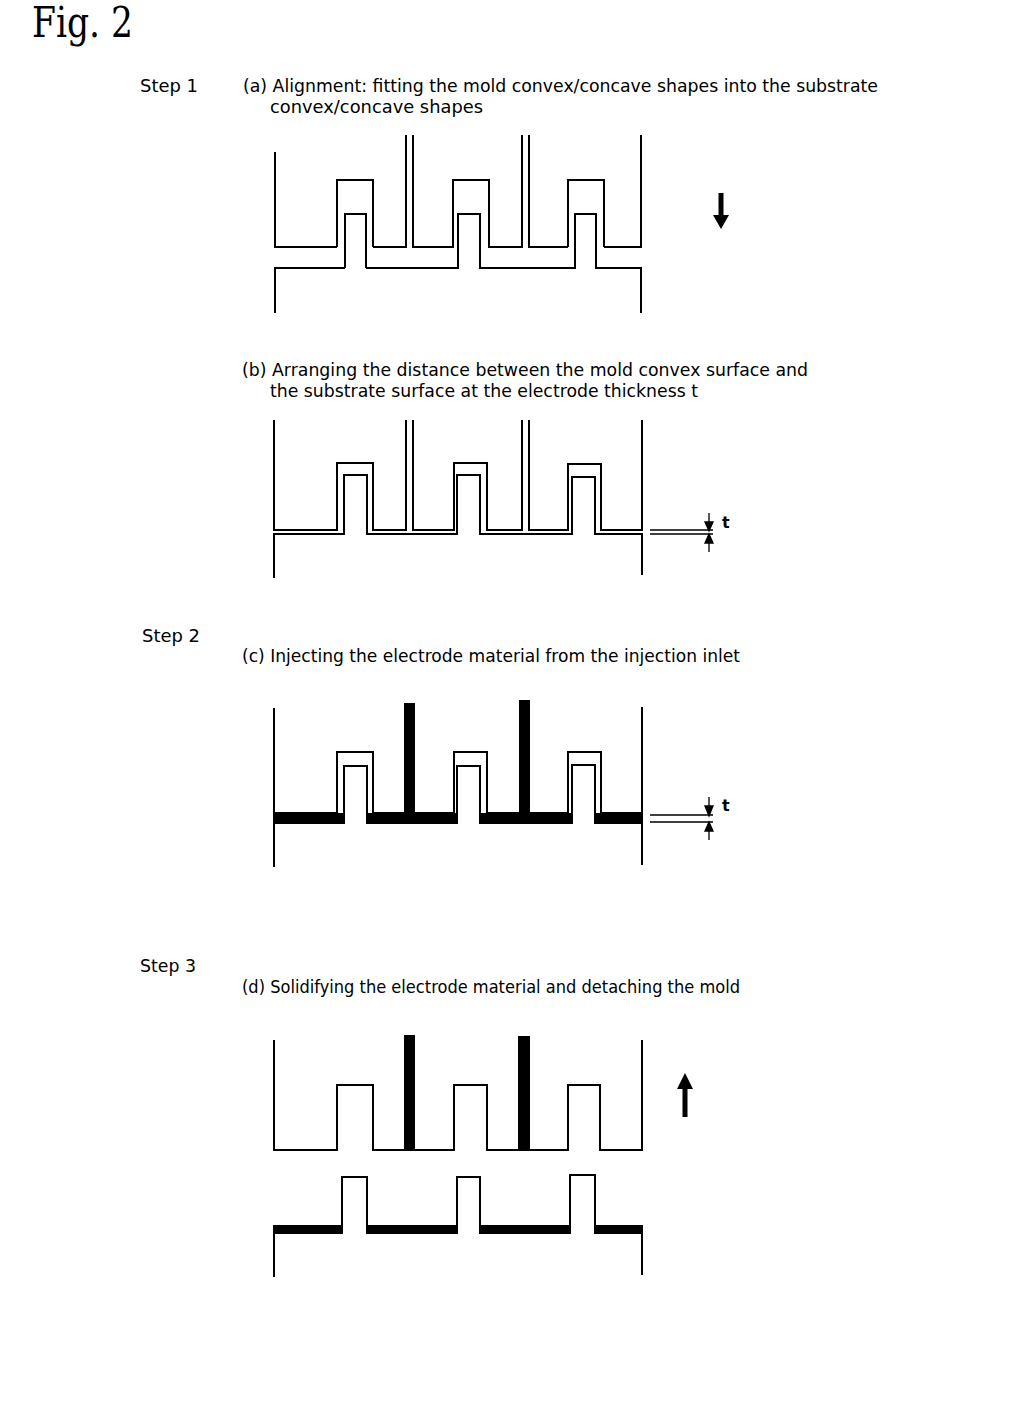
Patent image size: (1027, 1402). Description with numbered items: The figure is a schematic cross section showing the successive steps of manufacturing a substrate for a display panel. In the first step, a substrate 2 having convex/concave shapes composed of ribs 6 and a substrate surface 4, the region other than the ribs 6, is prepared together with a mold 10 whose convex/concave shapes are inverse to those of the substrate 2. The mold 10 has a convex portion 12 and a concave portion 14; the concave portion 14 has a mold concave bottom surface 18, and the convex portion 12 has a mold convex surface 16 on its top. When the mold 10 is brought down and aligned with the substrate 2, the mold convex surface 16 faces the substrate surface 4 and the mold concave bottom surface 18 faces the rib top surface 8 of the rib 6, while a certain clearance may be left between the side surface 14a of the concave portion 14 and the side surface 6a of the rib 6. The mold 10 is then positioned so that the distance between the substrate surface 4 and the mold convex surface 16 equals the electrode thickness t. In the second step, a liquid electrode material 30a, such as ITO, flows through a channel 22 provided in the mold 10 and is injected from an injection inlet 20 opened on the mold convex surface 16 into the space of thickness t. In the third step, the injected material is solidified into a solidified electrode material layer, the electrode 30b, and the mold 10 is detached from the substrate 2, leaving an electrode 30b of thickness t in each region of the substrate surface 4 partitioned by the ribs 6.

The substrate 2 is at (456, 740).
The substrate surface 4 is at (430, 267).
The rib 6 is at (355, 245).
The side surface of the rib 6a is at (343, 235).
The rib top surface 8 is at (345, 213).
The mold 10 is at (480, 640).
The convex portion 12 is at (628, 223).
The concave portion 14 is at (588, 203).
The side surface of the concave portion 14a is at (373, 208).
The mold convex surface 16 is at (625, 248).
The mold concave bottom surface 18 is at (583, 182).
The injection inlet 20 is at (405, 247).
The channel 22 is at (412, 173).
The liquid electrode material 30a is at (418, 823).
The electrode 30b is at (425, 1233).